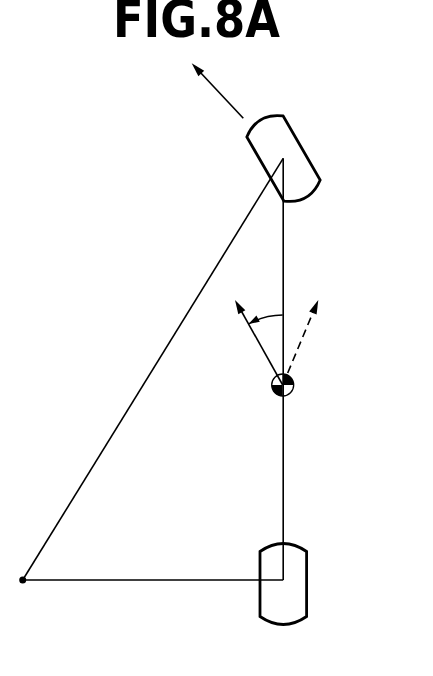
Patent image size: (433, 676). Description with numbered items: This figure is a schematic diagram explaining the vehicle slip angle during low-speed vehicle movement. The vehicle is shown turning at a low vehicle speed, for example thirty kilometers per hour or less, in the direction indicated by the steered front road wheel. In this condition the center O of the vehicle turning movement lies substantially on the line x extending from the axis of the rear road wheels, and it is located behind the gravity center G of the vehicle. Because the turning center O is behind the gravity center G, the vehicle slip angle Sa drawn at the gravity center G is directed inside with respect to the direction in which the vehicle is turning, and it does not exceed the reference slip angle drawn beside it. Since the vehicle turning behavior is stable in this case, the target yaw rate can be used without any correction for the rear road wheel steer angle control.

The vehicle slip angle Sa is at (257, 343).
The gravity center G is at (292, 392).
The center of vehicle turning movement O is at (23, 583).
The line extending from the axis of the rear road wheels x is at (147, 582).